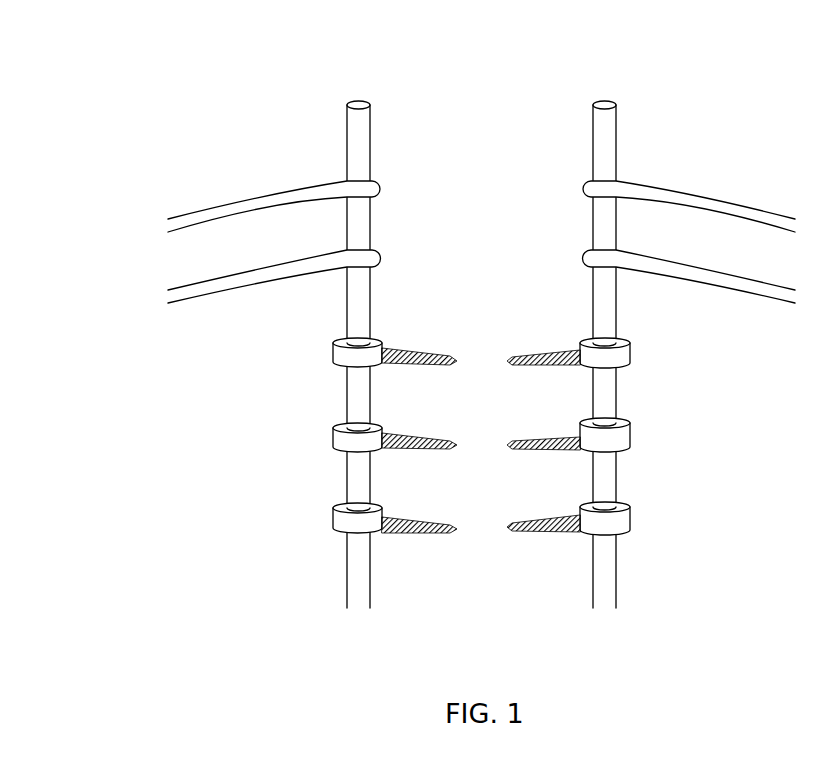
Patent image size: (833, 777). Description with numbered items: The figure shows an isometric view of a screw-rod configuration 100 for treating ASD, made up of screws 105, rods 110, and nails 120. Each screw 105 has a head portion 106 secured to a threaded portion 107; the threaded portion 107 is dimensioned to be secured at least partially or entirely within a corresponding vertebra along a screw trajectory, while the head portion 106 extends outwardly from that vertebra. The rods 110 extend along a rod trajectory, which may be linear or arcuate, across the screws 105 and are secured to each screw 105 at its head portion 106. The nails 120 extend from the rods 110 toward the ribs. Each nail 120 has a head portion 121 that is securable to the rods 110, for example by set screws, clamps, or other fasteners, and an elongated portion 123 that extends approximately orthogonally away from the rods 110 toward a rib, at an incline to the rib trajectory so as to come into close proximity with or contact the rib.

The screw-rod configuration 100 is at (386, 50).
The screw 105 is at (335, 518).
The head portion 106 is at (620, 437).
The threaded portion 107 is at (553, 438).
The rod 110 is at (360, 585).
The nail 120 is at (237, 198).
The head portion 121 is at (610, 190).
The elongated portion 123 is at (667, 265).